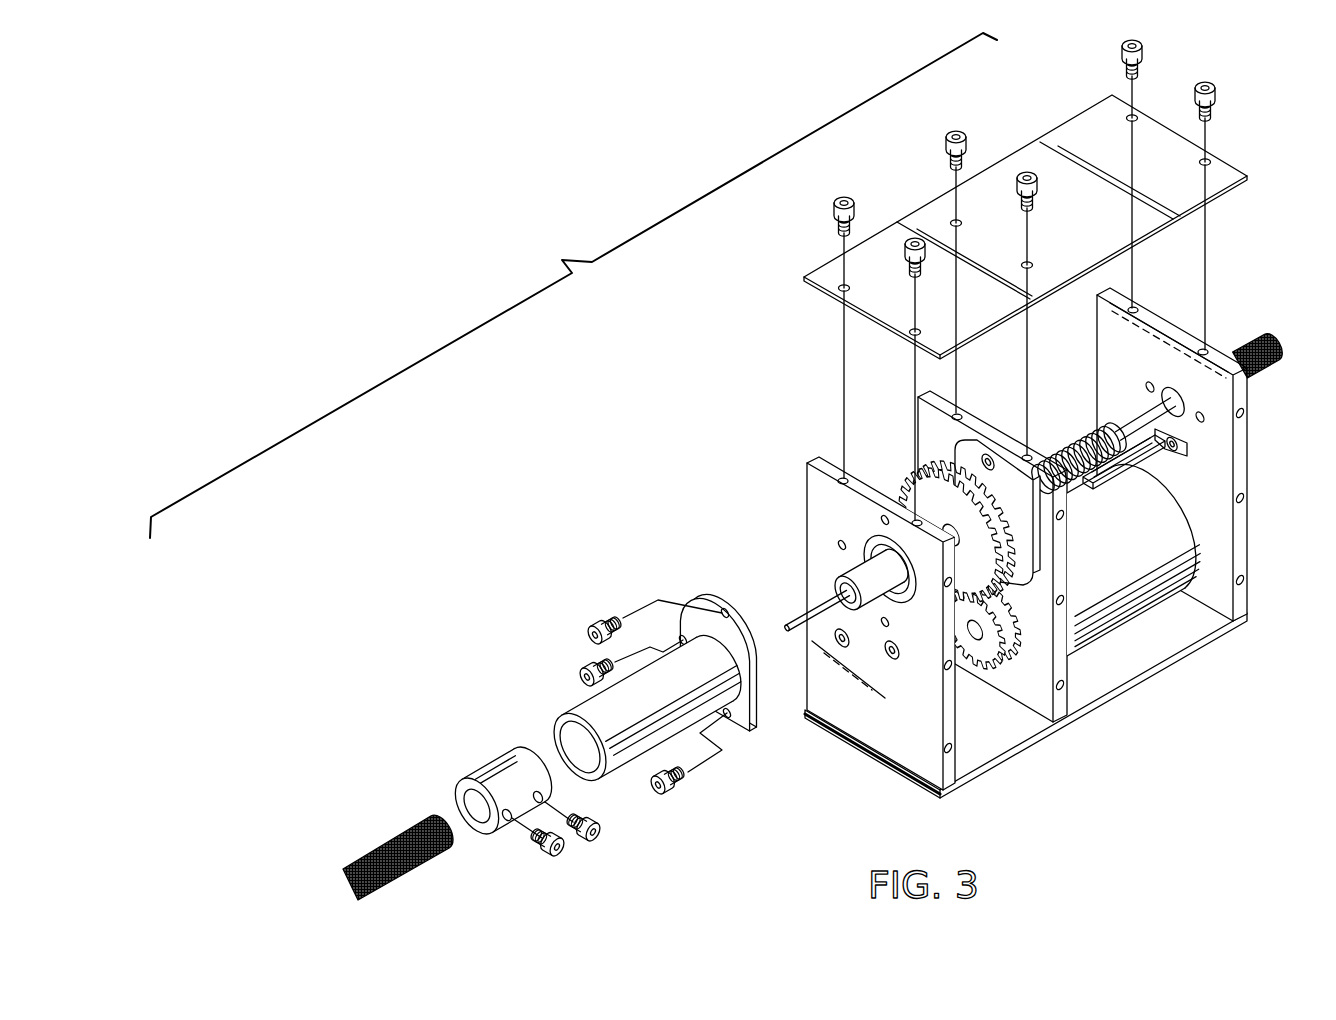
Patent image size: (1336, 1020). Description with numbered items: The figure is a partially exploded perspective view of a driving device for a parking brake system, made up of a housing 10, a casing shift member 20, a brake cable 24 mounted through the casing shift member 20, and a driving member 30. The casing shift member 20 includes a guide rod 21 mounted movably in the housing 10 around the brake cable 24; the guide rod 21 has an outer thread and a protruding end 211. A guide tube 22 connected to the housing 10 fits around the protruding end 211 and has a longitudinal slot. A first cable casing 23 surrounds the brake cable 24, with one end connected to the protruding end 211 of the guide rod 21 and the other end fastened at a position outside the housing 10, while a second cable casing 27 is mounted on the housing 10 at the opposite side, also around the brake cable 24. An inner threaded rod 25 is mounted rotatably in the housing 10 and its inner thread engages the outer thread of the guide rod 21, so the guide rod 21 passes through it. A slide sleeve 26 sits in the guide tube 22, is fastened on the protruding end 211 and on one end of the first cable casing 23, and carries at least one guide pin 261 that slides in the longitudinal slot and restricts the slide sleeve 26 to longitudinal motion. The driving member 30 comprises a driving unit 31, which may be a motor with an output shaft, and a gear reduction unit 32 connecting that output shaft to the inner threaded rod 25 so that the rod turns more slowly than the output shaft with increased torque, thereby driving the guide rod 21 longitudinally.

The housing 10 is at (1028, 106).
The casing shift member 20 is at (750, 760).
The guide rod 21 is at (1072, 443).
The protruding end 211 is at (840, 568).
The guide tube 22 is at (593, 713).
The first cable casing 23 is at (380, 852).
The brake cable 24 is at (799, 612).
The inner threaded rod 25 is at (990, 493).
The slide sleeve 26 is at (492, 780).
The guide pin 261 is at (548, 848).
The second cable casing 27 is at (1265, 370).
The driving member 30 is at (1057, 762).
The driving unit 31 is at (1143, 593).
The gear reduction unit 32 is at (972, 687).